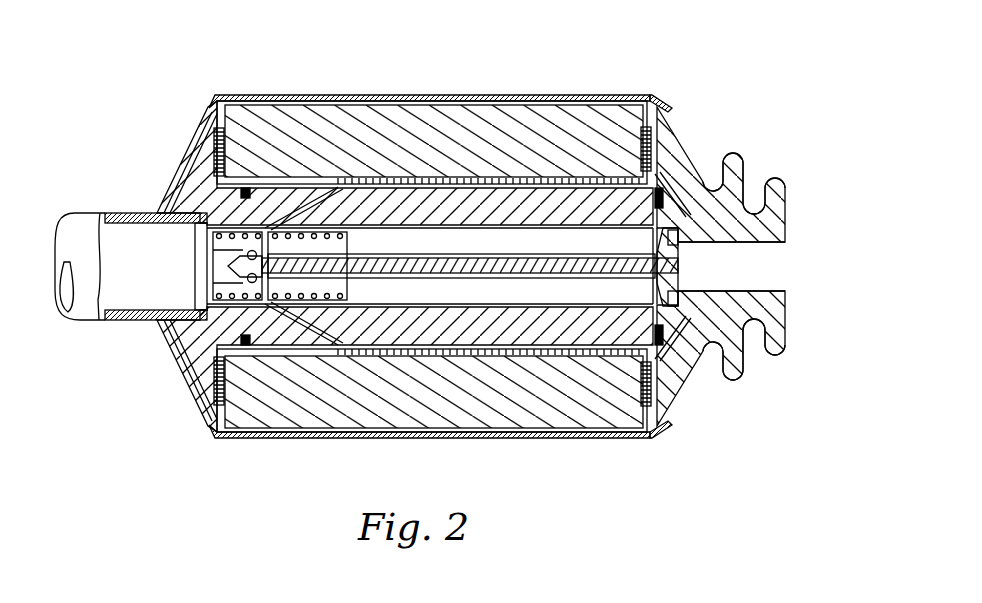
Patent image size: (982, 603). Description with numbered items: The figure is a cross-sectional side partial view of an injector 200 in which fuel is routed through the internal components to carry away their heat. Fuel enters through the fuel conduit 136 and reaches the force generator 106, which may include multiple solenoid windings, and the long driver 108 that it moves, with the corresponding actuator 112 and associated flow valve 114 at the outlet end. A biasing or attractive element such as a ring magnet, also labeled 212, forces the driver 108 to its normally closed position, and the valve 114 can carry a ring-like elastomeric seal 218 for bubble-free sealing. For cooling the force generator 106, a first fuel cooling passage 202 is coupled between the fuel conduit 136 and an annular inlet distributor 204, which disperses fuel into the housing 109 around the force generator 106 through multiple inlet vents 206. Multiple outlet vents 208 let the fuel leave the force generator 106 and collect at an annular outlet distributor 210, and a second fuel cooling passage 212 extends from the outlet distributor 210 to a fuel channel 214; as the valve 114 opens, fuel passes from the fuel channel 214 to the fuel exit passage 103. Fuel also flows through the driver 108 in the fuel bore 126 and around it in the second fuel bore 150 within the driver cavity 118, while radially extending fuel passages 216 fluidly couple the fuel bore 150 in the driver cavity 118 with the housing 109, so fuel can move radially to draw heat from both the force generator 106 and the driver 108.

The injector 200 is at (106, 469).
The fuel exit passage 103 is at (763, 247).
The force generator 106 is at (412, 122).
The driver 108 is at (455, 176).
The housing 109 is at (346, 101).
The actuator 112 is at (457, 280).
The flow valve 114 is at (680, 276).
The driver cavity 118 is at (550, 345).
The fuel bore 126 is at (373, 305).
The fuel conduit 136 is at (70, 236).
The second fuel bore 150 is at (643, 412).
The first fuel cooling passage 202 is at (190, 180).
The inlet distributor 204 is at (214, 140).
The inlet vents 206 is at (248, 185).
The outlet vents 208 is at (625, 101).
The outlet distributor 210 is at (660, 140).
The second fuel cooling passage 212 is at (660, 178).
The fuel channel 214 is at (680, 218).
The fuel passages 216 is at (545, 180).
The seal 218 is at (700, 310).